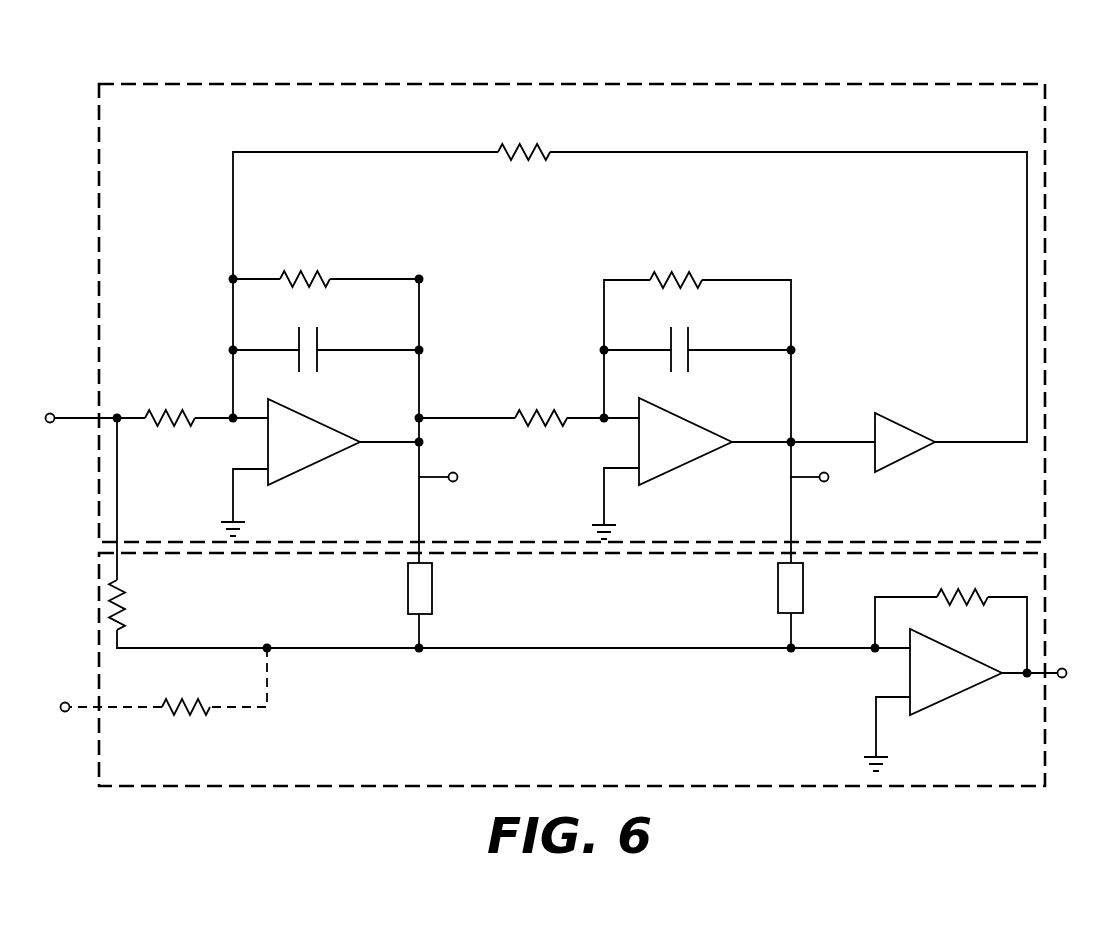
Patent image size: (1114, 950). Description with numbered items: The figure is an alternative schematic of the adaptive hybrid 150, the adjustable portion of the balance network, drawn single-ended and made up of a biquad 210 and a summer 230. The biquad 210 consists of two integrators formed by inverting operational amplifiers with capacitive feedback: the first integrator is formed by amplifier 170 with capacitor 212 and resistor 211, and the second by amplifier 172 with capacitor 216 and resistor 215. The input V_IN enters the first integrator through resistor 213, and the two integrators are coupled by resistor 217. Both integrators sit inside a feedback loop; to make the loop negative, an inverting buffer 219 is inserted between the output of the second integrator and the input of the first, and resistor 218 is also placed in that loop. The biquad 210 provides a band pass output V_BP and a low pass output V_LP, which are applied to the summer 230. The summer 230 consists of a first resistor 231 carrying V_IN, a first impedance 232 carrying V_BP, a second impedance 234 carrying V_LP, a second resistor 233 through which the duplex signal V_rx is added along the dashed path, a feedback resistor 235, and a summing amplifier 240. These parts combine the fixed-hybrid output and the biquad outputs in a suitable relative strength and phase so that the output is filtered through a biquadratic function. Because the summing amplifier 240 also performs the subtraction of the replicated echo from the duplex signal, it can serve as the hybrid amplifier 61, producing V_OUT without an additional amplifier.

The adaptive hybrid 150 is at (552, 60).
The biquad 210 is at (272, 116).
The resistor 211 is at (318, 277).
The capacitor 212 is at (321, 338).
The resistor 213 is at (162, 414).
The resistor 215 is at (686, 278).
The capacitor 216 is at (691, 338).
The resistor 217 is at (536, 414).
The resistor 218 is at (530, 148).
The inverting buffer 219 is at (890, 416).
The amplifier 170 is at (302, 412).
The amplifier 172 is at (676, 414).
The summer 230 is at (290, 586).
The first resistor 231 is at (126, 622).
The first impedance 232 is at (408, 584).
The second resistor 233 is at (200, 712).
The second impedance 234 is at (778, 583).
The feedback resistor 235 is at (950, 598).
The summing amplifier 240 is at (920, 712).
The hybrid amplifier 61 is at (973, 690).